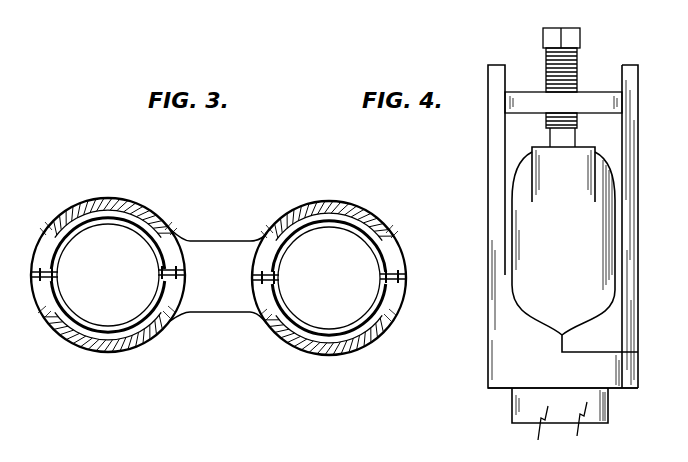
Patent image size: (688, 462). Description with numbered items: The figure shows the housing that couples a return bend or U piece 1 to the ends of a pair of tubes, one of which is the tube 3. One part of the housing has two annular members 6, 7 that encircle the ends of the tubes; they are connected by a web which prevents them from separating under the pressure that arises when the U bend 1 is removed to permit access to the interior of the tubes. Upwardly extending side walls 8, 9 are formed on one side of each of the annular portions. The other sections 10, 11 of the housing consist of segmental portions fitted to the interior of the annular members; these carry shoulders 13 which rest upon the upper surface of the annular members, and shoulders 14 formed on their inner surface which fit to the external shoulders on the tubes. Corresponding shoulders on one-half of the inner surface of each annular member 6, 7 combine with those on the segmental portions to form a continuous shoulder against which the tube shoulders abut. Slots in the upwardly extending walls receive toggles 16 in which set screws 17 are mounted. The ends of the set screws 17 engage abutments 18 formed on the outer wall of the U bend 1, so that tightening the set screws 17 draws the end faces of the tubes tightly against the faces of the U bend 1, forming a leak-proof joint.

In FIG. 4, the return bend or U piece 1 is at (563, 243).
In FIG. 4, the tube 3 is at (560, 414).
In FIG. 3, the annular member 6 is at (43, 298).
In FIG. 3, the annular member 7 is at (268, 322).
In FIG. 4, the annular member 7 is at (626, 375).
In FIG. 3, the side wall 8 is at (113, 353).
In FIG. 3, the side wall 9 is at (344, 356).
In FIG. 4, the side wall 9 is at (492, 220).
In FIG. 3, the housing section 10 is at (118, 204).
In FIG. 3, the housing section 11 is at (343, 204).
In FIG. 4, the housing section 11 is at (632, 237).
In FIG. 4, the shoulder 13 is at (640, 348).
In FIG. 3, the shoulder 14 is at (128, 227).
In FIG. 4, the toggle 16 is at (598, 99).
In FIG. 4, the set screw 17 is at (580, 42).
In FIG. 4, the abutment 18 is at (563, 174).